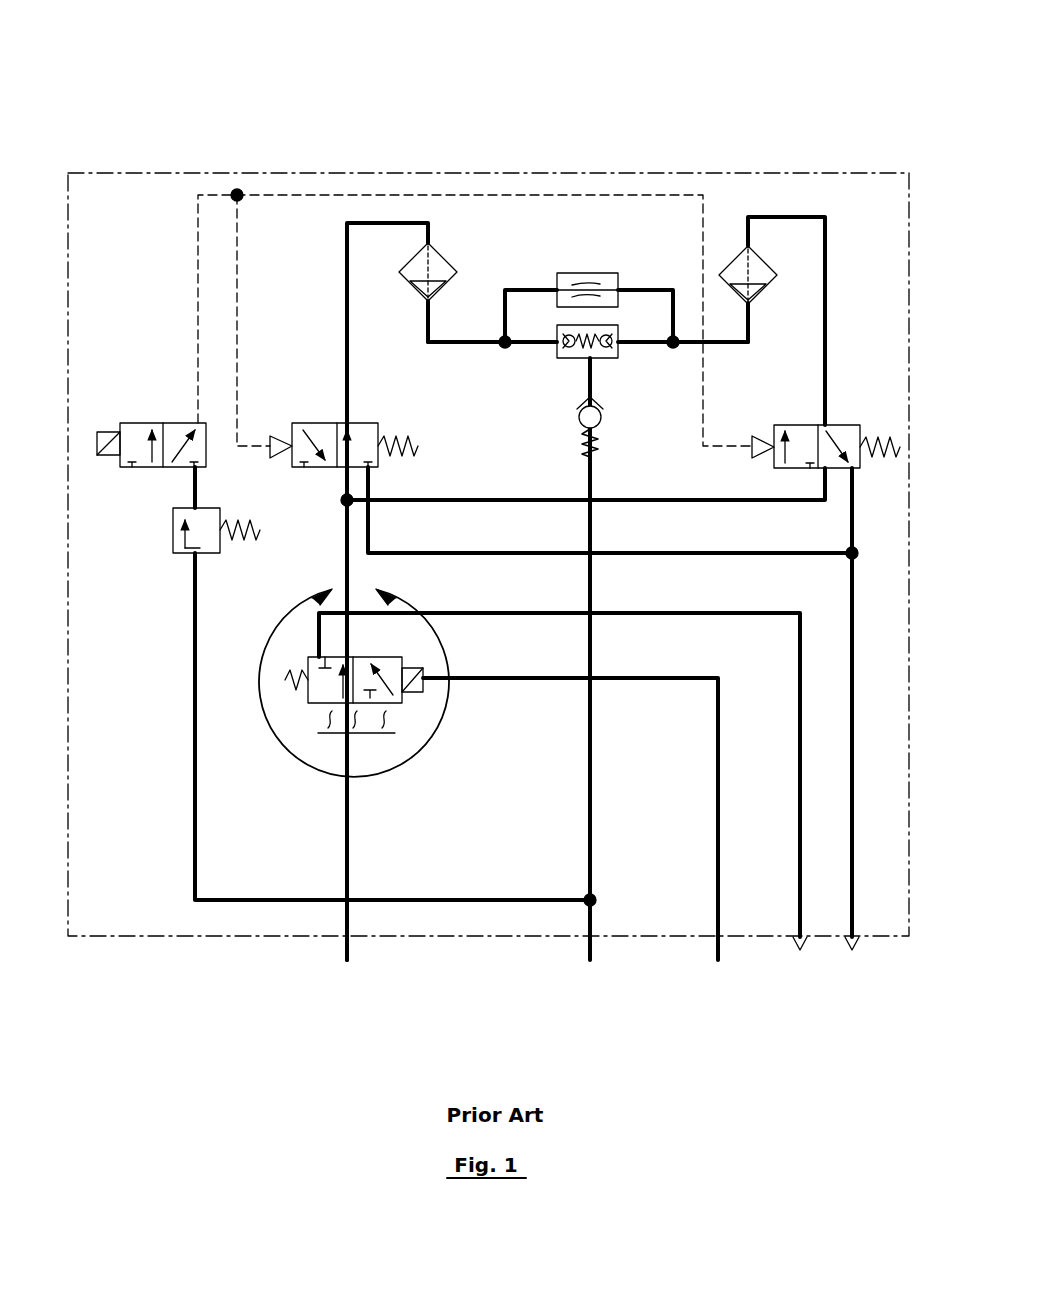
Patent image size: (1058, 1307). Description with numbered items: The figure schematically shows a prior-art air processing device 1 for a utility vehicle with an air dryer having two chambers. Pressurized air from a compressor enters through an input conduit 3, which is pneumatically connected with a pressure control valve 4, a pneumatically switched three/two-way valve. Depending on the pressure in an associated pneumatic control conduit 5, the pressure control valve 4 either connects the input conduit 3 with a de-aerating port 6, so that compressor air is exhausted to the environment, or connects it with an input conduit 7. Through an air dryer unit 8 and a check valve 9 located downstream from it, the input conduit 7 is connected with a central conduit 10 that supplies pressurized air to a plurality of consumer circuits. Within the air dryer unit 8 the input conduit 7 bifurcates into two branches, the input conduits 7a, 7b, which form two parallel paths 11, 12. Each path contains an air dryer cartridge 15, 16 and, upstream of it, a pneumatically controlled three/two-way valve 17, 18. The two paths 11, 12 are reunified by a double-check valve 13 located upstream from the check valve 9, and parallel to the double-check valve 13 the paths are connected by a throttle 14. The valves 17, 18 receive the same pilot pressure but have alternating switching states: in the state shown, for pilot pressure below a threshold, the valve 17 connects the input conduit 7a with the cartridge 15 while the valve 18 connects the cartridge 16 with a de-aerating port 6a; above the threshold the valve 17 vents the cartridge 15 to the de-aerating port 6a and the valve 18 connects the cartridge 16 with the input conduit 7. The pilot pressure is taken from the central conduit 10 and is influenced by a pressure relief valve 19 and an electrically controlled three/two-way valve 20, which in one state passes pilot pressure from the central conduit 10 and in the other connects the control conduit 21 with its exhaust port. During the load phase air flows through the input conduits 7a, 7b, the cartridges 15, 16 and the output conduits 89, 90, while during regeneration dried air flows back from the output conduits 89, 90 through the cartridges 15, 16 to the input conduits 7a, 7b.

The air processing device 1 is at (545, 128).
The input conduit 3 is at (342, 952).
The pressure control valve 4 is at (308, 714).
The pneumatic control conduit 5 is at (538, 682).
The de-aerating port 6 is at (797, 952).
The de-aerating port 6a is at (850, 952).
The input conduit 7 is at (342, 531).
The input conduit 7a is at (342, 485).
The input conduit 7b is at (713, 503).
The air dryer unit 8 is at (634, 230).
The check valve 9 is at (574, 430).
The central conduit 10 is at (592, 820).
The path 11 is at (403, 202).
The path 12 is at (783, 192).
The double-check valve 13 is at (570, 362).
The throttle 14 is at (590, 268).
The air dryer cartridge 15 is at (446, 250).
The air dryer cartridge 16 is at (764, 255).
The pneumatically controlled 3/2-way valve 17 is at (318, 412).
The pneumatically controlled 3/2-way valve 18 is at (840, 412).
The pressure relief valve 19 is at (168, 554).
The electrically controlled 3/2-way valve 20 is at (155, 412).
The control conduit 21 is at (302, 196).
The output conduit 89 is at (428, 348).
The output conduit 90 is at (735, 347).